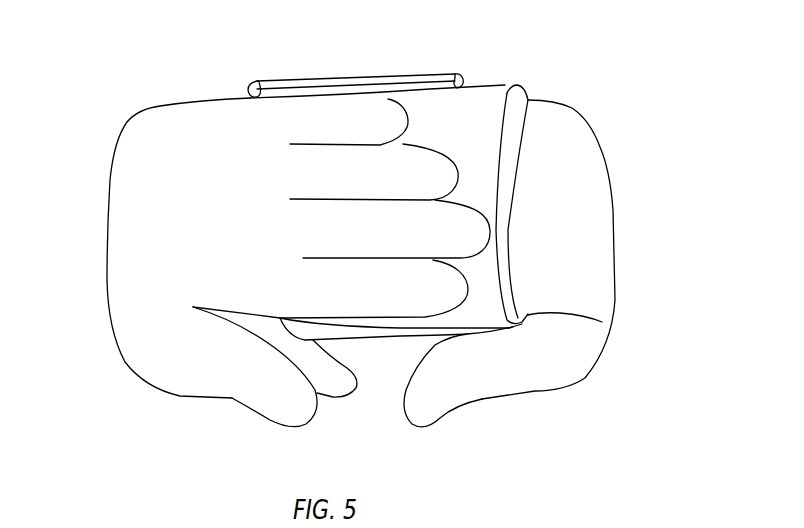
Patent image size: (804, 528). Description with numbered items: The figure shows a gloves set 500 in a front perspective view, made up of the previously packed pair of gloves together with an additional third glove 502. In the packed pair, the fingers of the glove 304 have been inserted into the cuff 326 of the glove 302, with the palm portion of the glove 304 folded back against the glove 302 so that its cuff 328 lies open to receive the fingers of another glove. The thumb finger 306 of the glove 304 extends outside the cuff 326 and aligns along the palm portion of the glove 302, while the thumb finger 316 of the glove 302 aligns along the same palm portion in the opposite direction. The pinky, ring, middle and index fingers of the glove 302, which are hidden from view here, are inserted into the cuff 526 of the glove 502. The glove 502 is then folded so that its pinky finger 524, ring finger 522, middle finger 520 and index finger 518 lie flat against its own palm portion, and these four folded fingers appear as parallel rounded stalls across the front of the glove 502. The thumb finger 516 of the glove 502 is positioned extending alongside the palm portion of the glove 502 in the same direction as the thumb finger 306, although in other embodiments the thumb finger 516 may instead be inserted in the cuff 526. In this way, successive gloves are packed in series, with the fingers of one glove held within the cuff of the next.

The gloves set 500 is at (599, 43).
The glove 502 is at (107, 193).
The glove 302 is at (615, 225).
The glove 304 is at (425, 73).
The cuff 326 is at (249, 96).
The cuff 328 is at (467, 76).
The cuff 526 is at (513, 187).
The pinky finger 524 is at (349, 134).
The ring finger 522 is at (396, 187).
The middle finger 520 is at (412, 244).
The index finger 518 is at (402, 302).
The thumb finger 516 is at (233, 400).
The thumb finger 306 is at (335, 396).
The thumb finger 316 is at (486, 400).